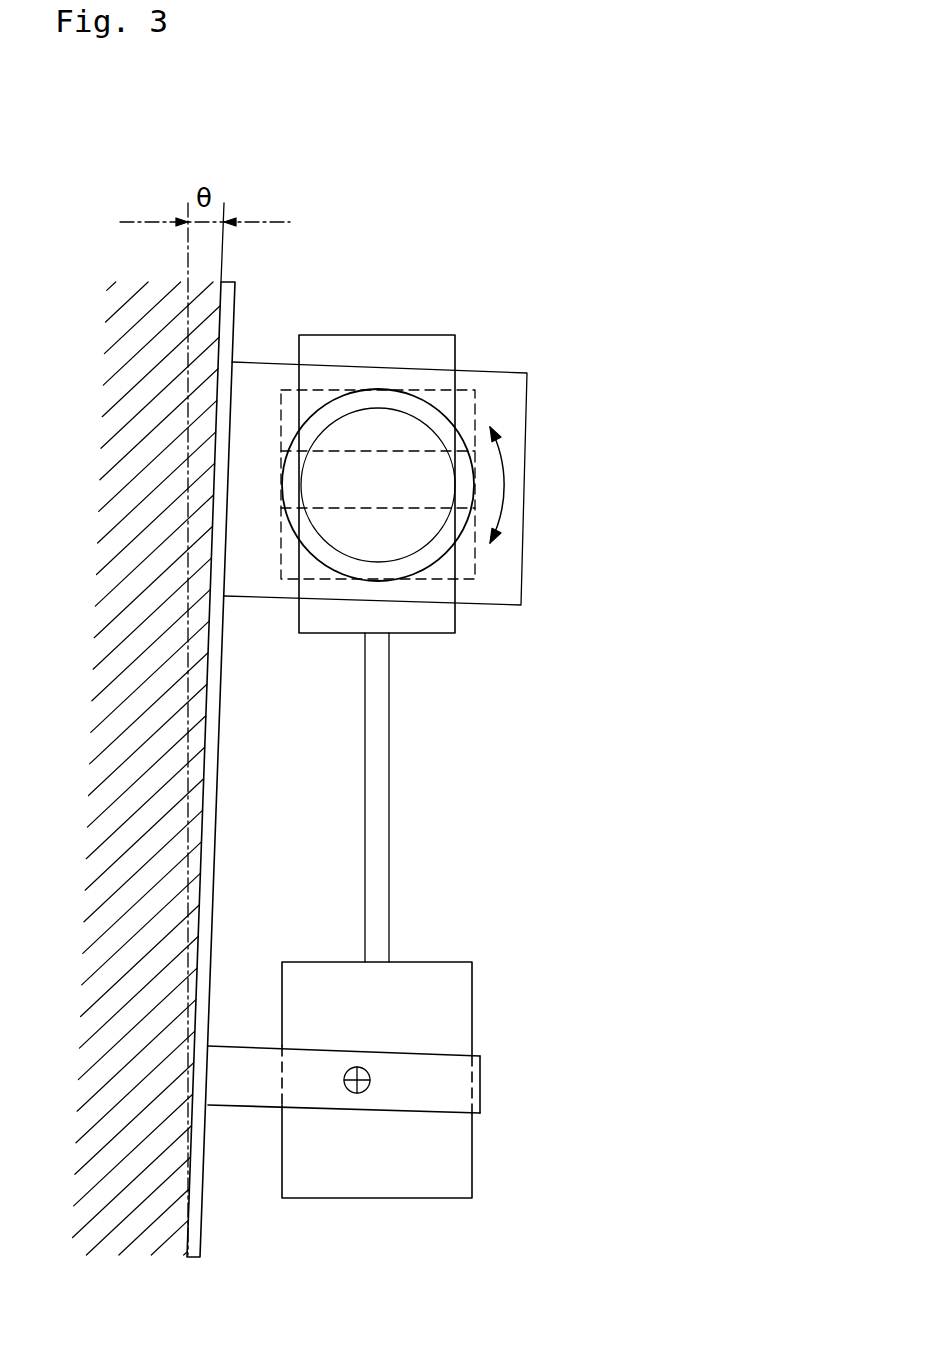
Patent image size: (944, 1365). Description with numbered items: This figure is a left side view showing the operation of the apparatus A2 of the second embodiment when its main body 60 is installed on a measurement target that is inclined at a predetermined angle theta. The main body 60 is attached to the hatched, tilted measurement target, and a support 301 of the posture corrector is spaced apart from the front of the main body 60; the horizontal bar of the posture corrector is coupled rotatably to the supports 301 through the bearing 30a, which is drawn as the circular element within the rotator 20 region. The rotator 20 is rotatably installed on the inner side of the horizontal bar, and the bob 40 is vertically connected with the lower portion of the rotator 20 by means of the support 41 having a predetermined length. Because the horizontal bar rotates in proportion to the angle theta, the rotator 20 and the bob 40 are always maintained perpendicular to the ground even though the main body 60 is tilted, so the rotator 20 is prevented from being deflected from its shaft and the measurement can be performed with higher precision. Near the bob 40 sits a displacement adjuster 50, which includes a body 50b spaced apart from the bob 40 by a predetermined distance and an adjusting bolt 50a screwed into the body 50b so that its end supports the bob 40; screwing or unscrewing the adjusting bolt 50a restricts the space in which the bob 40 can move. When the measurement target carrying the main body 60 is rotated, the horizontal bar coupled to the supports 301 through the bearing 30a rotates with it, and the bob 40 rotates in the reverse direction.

The apparatus A2 is at (573, 267).
The rotator 20 is at (407, 342).
The bearing 30a is at (428, 404).
The support 301 is at (528, 387).
The support 41 is at (387, 772).
The bob 40 is at (438, 992).
The displacement adjuster 50 is at (420, 1103).
The adjusting bolt 50a is at (367, 1088).
The body 50b is at (447, 1083).
The main body 60 is at (202, 1215).